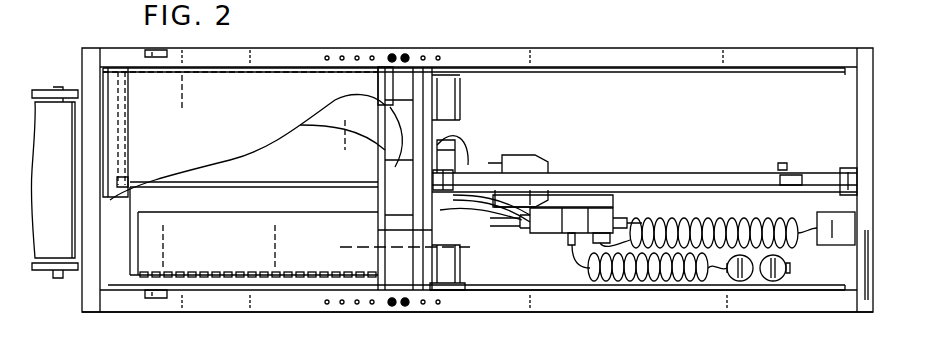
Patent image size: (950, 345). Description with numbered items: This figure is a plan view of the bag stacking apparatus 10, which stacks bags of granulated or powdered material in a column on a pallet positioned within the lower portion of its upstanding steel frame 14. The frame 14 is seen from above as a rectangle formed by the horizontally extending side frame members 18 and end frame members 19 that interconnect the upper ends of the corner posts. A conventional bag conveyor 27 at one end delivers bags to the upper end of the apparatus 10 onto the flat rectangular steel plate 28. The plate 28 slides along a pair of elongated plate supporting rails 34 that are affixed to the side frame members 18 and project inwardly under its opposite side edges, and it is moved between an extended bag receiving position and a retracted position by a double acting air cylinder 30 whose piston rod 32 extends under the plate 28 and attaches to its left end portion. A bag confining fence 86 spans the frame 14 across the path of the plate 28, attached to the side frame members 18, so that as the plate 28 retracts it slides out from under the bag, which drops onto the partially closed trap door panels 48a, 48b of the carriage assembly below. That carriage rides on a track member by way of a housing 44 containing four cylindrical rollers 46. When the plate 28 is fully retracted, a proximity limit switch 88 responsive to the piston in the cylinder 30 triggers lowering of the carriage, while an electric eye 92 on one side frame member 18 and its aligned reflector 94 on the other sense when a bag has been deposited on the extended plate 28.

The apparatus 10 is at (556, 31).
The frame 14 is at (826, 312).
The side frame members 18 is at (665, 50).
The end frame members 19 is at (867, 88).
The bag conveyor 27 is at (52, 263).
The plate 28 is at (390, 157).
The double acting air cylinder 30 is at (678, 172).
The piston rod 32 is at (327, 182).
The plate supporting rails 34 is at (240, 70).
The housing 44 is at (447, 137).
The rollers 46 is at (433, 165).
The panel 48a is at (192, 213).
The panel 48b is at (302, 153).
The fence 86 is at (377, 85).
The proximity limit switch 88 is at (797, 175).
The electric eye 92 is at (168, 290).
The reflector 94 is at (160, 63).